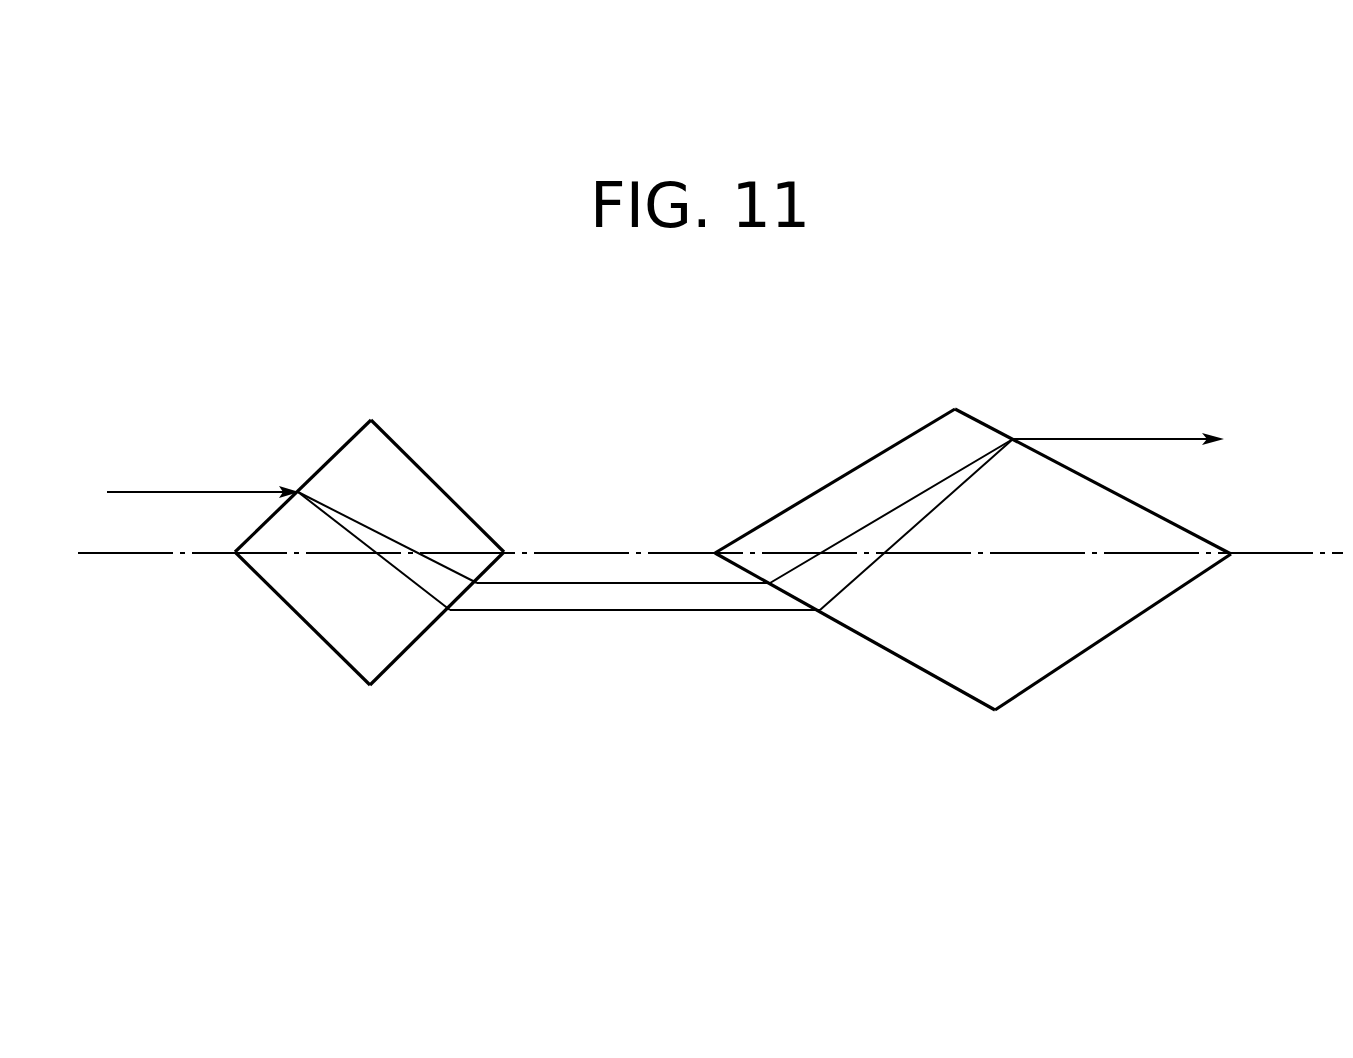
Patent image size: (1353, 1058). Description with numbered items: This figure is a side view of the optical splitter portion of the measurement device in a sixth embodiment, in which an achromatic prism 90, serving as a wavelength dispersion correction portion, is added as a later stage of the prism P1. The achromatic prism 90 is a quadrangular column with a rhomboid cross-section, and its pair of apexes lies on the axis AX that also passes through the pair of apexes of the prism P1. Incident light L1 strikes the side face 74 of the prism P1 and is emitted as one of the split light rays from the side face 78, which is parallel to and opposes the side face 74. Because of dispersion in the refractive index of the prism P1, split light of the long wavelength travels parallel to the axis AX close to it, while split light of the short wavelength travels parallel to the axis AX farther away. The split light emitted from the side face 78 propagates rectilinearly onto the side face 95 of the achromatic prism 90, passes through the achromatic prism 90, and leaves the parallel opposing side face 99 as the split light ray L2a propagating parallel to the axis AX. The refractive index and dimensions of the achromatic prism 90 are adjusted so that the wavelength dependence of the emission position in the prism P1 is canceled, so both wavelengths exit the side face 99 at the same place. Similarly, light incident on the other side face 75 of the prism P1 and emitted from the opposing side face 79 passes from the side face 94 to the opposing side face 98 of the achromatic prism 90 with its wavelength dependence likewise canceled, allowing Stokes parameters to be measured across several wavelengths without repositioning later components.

The side face 74 is at (330, 460).
The other side face 75 is at (298, 618).
The side face 78 is at (415, 645).
The opposing side face 79 is at (448, 493).
The prism P1 is at (369, 535).
The achromatic prism 90 is at (982, 518).
The side face 94 is at (842, 477).
The side face 95 is at (880, 645).
The opposing side face 98 is at (1112, 637).
The side face 99 is at (1147, 510).
The incident light L1 is at (172, 490).
The split light ray L2a is at (1113, 437).
The axis AX is at (640, 552).